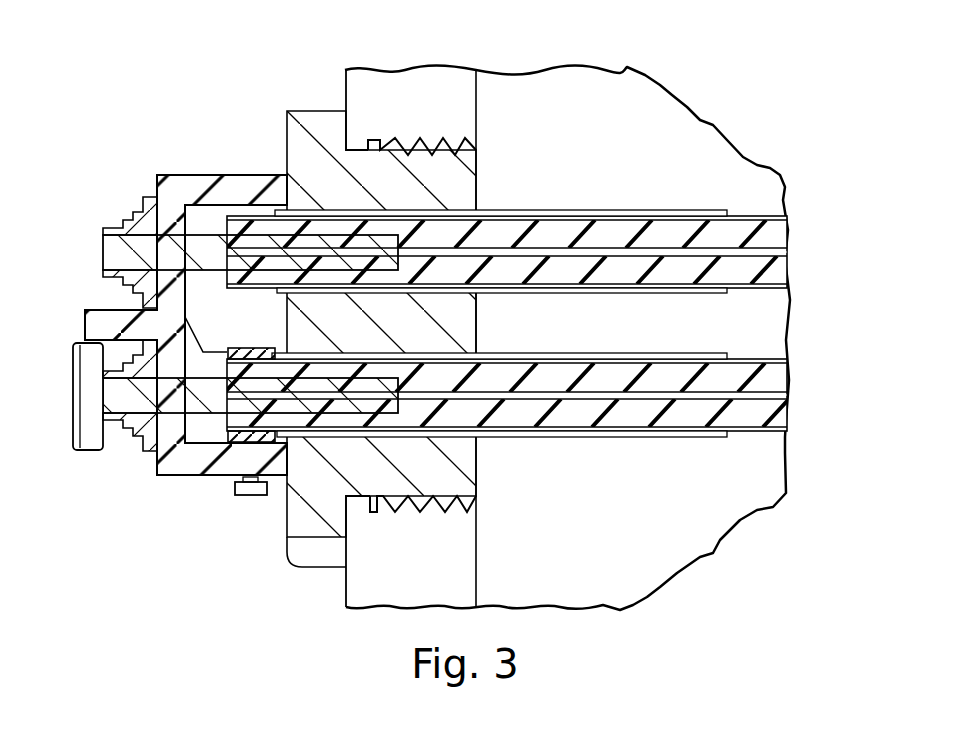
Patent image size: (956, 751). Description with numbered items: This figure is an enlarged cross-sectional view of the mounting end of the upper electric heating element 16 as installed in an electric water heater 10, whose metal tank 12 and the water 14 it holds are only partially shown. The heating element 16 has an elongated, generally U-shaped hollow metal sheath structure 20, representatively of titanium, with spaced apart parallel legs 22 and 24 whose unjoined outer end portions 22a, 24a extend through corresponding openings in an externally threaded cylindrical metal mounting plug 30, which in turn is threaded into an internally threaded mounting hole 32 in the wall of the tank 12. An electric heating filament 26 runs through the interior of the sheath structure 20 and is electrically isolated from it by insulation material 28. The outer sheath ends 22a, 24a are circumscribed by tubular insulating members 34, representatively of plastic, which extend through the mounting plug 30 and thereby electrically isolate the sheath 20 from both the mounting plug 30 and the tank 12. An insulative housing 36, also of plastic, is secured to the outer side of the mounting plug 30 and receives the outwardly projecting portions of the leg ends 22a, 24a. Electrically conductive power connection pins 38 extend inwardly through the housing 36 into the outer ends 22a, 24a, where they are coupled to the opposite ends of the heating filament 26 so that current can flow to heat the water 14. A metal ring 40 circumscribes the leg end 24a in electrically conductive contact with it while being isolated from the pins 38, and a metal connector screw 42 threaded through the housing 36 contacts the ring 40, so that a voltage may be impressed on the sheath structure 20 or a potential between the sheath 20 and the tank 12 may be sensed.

The electric water heater 10 is at (690, 107).
The metal tank 12 is at (411, 306).
The water 14 is at (560, 157).
The upper electric heating element 16 is at (542, 210).
The hollow metal sheath structure 20 is at (542, 372).
The leg 22 is at (790, 212).
The outer end portion 22a is at (268, 190).
The leg 24 is at (787, 433).
The outer end portion 24a is at (253, 347).
The electric heating filament 26 is at (641, 254).
The insulation material 28 is at (600, 225).
The metal mounting plug 30 is at (470, 458).
The mounting hole 32 is at (408, 150).
The tubular insulating members 34 is at (668, 210).
The insulative housing 36 is at (188, 183).
The power connection pins 38 is at (112, 253).
The metal ring 40 is at (247, 448).
The metal connector screw 42 is at (250, 496).